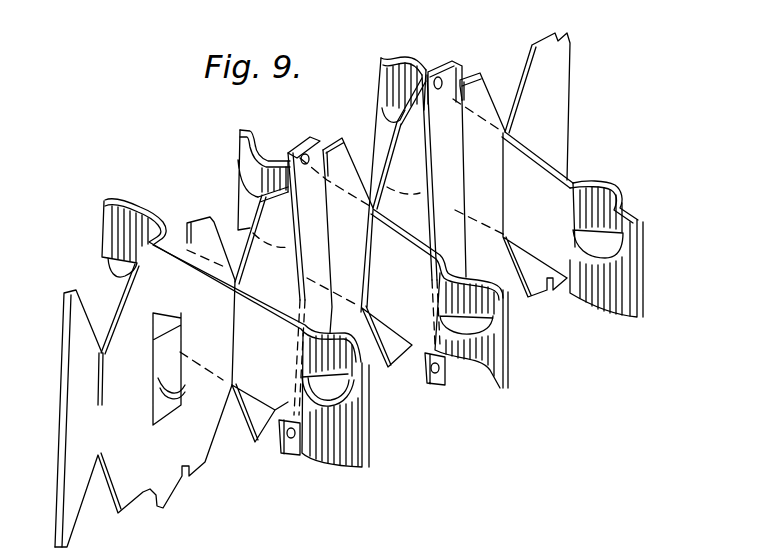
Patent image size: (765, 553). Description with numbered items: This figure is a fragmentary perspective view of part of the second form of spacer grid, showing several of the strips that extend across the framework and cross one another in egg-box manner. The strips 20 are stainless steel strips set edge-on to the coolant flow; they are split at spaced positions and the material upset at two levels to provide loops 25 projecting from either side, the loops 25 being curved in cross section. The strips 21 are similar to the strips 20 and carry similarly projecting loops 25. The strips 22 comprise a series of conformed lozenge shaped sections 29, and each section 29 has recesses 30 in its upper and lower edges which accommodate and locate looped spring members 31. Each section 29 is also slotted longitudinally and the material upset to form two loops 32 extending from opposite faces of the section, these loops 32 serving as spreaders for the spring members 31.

The strip 20 is at (402, 365).
The strip 21 is at (553, 183).
The strip 22 is at (140, 299).
The loop 25 is at (240, 138).
The lozenge shaped section 29 is at (484, 101).
The recess 30 is at (461, 82).
The looped spring member 31 is at (442, 70).
The loop 32 is at (155, 350).